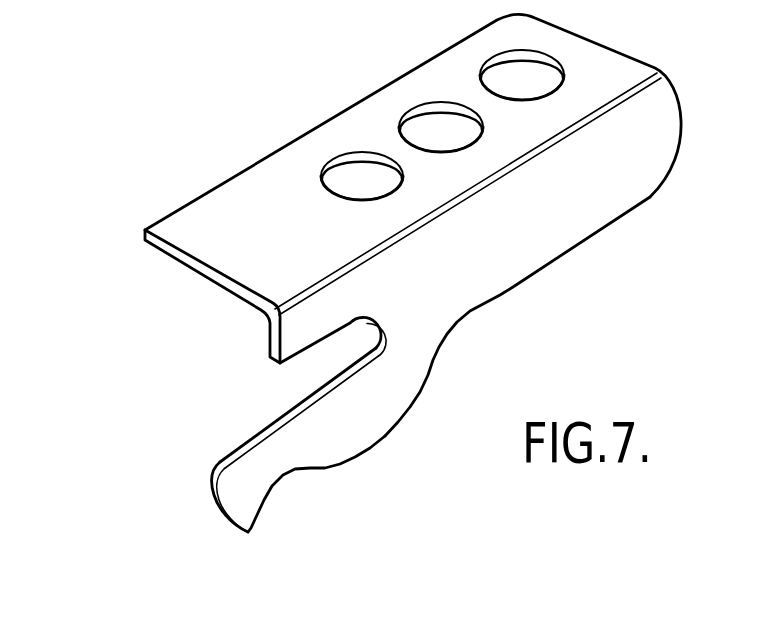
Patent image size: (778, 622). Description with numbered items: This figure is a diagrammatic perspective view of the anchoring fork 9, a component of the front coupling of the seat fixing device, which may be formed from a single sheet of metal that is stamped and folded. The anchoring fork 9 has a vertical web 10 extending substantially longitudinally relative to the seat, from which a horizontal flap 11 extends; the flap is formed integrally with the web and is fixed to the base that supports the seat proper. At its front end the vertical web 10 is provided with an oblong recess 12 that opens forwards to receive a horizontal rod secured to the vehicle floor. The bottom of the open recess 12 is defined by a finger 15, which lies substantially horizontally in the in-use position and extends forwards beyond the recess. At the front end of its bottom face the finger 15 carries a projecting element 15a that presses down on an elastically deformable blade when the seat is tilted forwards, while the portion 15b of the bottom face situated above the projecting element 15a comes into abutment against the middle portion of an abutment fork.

The anchoring fork 9 is at (137, 222).
The vertical web 10 is at (467, 263).
The horizontal flap 11 is at (277, 200).
The oblong recess 12 is at (290, 373).
The finger 15 is at (237, 487).
The projecting element 15a is at (245, 530).
The portion of the bottom face of the finger 15b is at (307, 472).